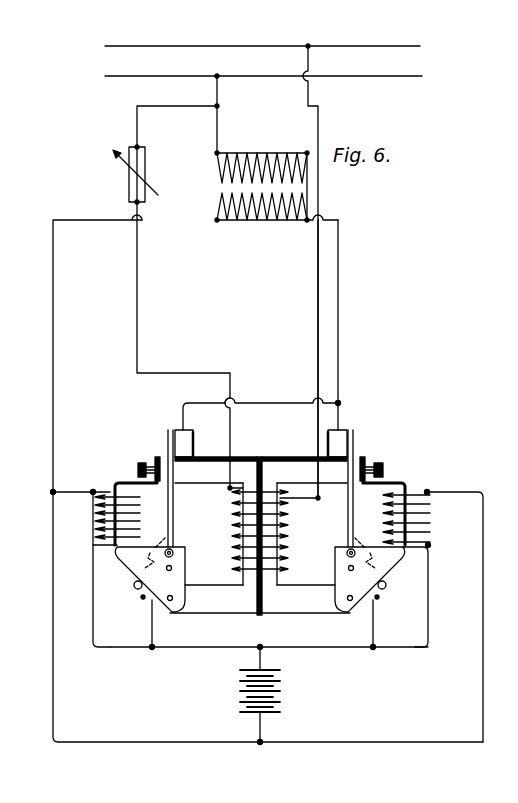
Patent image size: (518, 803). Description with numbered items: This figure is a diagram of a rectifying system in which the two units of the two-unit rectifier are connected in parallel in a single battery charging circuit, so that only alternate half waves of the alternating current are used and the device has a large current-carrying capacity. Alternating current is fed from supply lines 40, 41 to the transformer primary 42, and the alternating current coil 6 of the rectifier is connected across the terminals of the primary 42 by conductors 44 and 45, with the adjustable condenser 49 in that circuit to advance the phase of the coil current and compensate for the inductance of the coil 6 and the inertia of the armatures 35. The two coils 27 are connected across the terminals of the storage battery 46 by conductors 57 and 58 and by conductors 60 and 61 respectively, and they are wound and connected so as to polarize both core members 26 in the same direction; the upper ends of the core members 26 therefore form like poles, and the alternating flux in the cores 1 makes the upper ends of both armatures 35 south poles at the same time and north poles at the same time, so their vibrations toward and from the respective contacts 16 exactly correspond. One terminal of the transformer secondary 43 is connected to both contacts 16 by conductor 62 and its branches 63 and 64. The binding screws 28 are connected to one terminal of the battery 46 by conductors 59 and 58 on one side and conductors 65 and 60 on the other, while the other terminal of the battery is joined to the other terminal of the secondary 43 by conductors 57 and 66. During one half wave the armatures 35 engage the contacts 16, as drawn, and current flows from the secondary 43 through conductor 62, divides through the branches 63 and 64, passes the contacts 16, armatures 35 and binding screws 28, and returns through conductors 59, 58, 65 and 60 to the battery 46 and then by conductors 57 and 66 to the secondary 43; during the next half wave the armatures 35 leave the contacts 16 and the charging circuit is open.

The core 1 is at (260, 536).
The alternating current coil 6 is at (232, 525).
The contact 16 is at (192, 440).
The core member 26 is at (118, 480).
The coil 27 is at (130, 538).
The binding screw 28 is at (142, 599).
The armature 35 is at (174, 497).
The supply line 40 is at (352, 44).
The supply line 41 is at (375, 76).
The transformer primary 42 is at (250, 157).
The transformer secondary 43 is at (252, 226).
The conductor 44 is at (135, 262).
The conductor 45 is at (317, 290).
The storage battery 46 is at (278, 701).
The adjustable condenser 49 is at (125, 175).
The conductor 57 is at (78, 491).
The conductor 58 is at (203, 648).
The conductor 59 is at (153, 618).
The conductor 60 is at (325, 643).
The conductor 61 is at (484, 608).
The conductor 62 is at (338, 333).
The branch 63 is at (258, 400).
The branch 64 is at (340, 406).
The conductor 65 is at (374, 612).
The conductor 66 is at (53, 345).